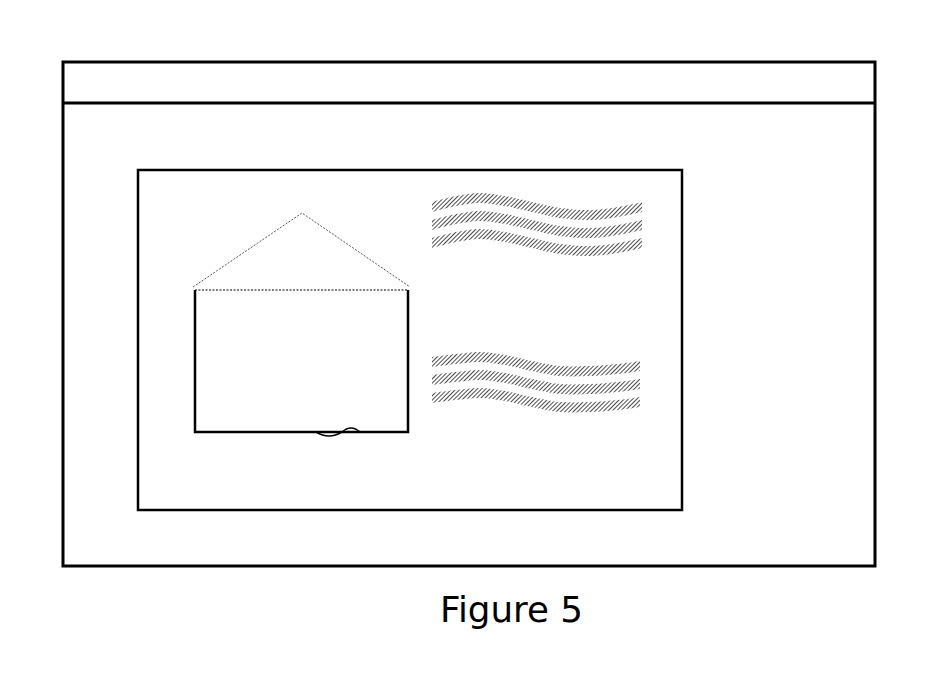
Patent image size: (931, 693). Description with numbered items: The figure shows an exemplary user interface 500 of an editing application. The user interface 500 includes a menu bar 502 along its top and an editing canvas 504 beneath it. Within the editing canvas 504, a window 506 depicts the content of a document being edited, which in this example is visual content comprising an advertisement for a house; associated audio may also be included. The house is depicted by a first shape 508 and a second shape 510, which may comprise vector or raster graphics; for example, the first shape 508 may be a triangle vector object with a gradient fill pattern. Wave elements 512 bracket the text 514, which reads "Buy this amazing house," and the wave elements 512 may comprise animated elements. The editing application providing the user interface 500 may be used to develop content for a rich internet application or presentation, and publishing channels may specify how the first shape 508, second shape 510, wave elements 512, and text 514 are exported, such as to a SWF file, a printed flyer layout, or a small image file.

The user interface 500 is at (138, 53).
The menu bar 502 is at (845, 91).
The editing canvas 504 is at (852, 540).
The window 506 is at (658, 499).
The first shape 508 is at (250, 248).
The second shape 510 is at (360, 432).
The wave elements 512 is at (438, 205).
The text 514 is at (607, 313).